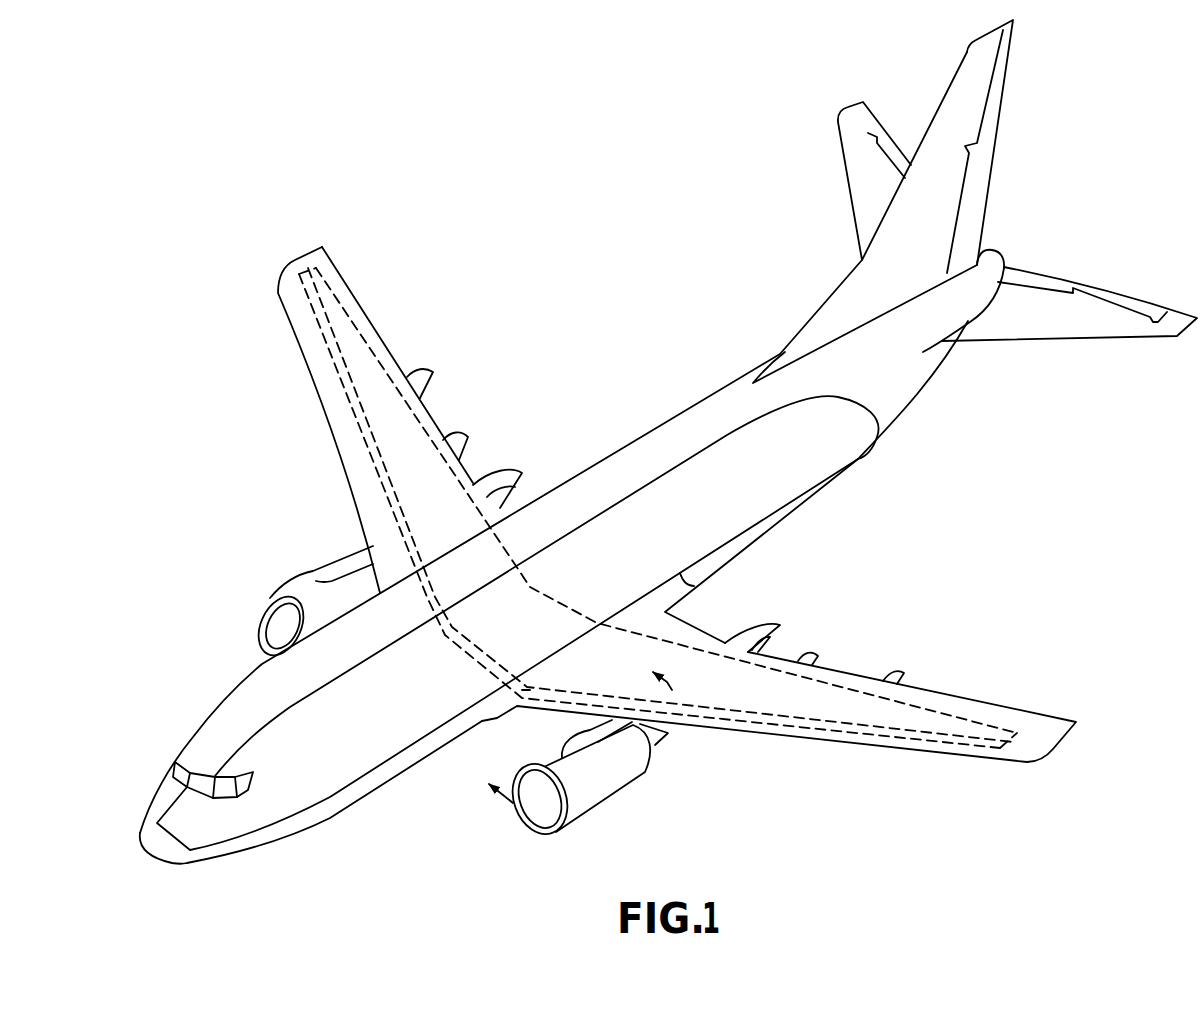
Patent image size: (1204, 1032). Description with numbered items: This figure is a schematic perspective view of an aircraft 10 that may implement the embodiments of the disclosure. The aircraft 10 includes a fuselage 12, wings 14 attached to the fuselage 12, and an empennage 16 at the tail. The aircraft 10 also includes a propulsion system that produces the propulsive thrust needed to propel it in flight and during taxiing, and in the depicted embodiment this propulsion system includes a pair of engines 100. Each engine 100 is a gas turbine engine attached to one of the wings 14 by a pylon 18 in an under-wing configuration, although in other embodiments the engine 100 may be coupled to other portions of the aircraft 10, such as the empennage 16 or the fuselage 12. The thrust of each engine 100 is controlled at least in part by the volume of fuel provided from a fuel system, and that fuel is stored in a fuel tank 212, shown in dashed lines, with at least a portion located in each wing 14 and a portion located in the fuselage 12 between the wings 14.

The aircraft 10 is at (243, 647).
The fuselage 12 is at (727, 523).
The wings 14 is at (293, 310).
The empennage 16 is at (1012, 176).
The pylon 18 is at (655, 734).
The engine 100 is at (627, 802).
The fuel tank 212 is at (843, 703).